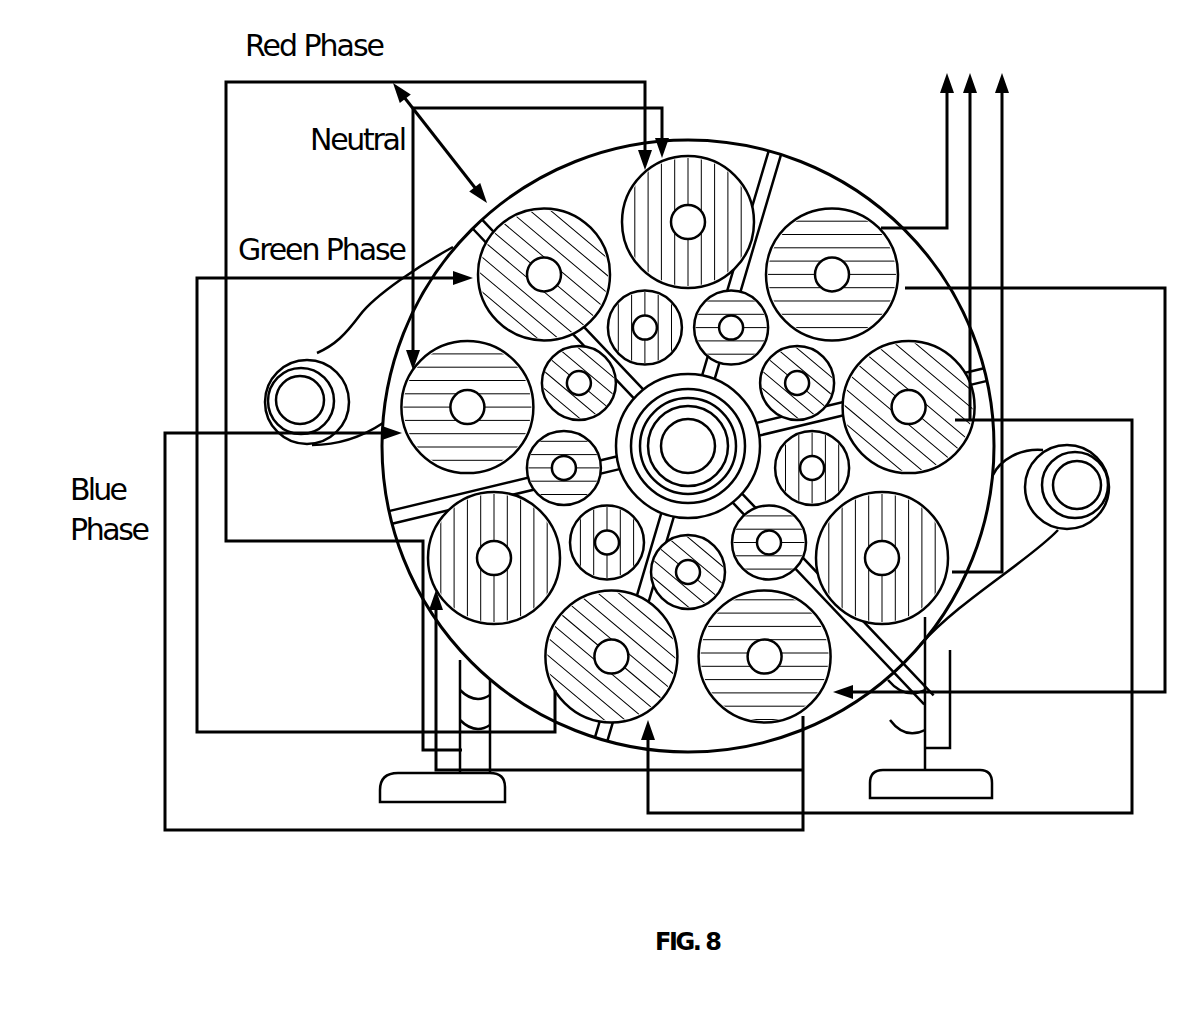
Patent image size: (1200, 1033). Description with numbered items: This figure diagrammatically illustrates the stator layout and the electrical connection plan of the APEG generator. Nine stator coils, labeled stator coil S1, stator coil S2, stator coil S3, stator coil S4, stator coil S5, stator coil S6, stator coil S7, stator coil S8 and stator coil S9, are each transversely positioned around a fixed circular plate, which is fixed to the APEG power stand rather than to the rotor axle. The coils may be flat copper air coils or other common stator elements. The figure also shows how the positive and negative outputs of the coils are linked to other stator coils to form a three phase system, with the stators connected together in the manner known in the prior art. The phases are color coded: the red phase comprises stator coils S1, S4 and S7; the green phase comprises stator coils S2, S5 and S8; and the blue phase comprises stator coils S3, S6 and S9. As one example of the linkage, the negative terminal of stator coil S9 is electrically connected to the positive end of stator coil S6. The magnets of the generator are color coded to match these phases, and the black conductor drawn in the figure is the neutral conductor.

The stator coil S1 is at (678, 160).
The stator coil S2 is at (513, 212).
The stator coil S3 is at (402, 440).
The stator coil S4 is at (427, 573).
The stator coil S5 is at (612, 722).
The stator coil S6 is at (773, 723).
The stator coil S7 is at (925, 635).
The stator coil S8 is at (957, 360).
The stator coil S9 is at (877, 217).